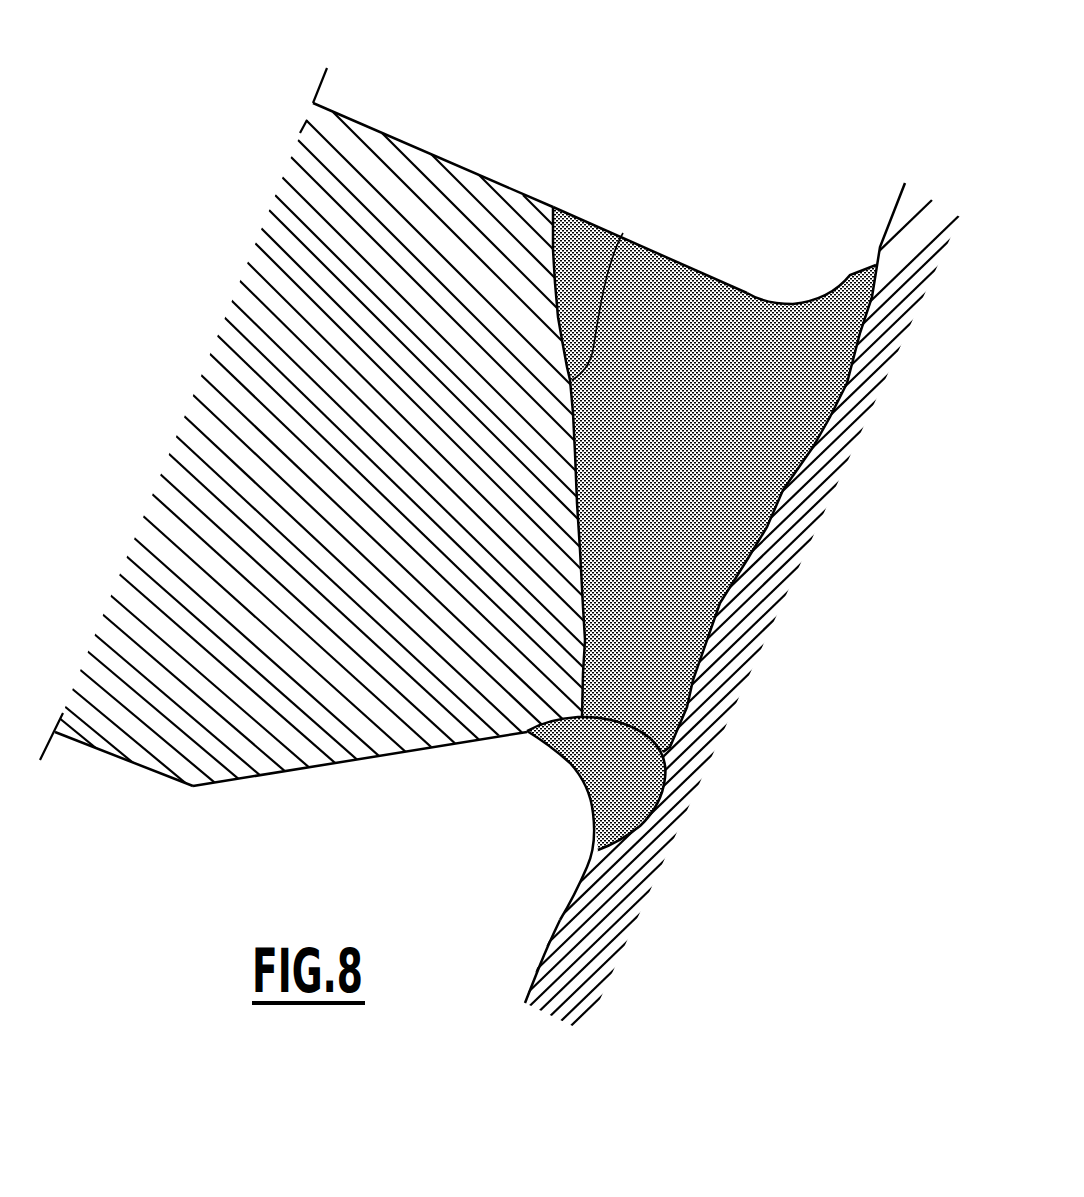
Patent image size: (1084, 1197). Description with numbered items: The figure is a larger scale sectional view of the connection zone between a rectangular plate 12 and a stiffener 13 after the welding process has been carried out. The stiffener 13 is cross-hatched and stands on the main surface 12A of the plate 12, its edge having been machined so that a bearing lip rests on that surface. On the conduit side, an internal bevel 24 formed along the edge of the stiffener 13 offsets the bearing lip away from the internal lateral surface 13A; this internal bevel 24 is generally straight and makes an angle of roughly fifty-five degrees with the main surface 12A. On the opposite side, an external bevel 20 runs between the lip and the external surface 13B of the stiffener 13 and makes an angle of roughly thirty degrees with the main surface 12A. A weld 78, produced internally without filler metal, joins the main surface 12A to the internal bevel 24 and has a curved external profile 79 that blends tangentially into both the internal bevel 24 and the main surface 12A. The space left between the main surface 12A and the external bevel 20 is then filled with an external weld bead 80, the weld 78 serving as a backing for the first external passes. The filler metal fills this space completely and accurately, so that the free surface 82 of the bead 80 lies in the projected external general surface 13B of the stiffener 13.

The plate 12 is at (757, 623).
The main surface of the plate 12A is at (556, 926).
The stiffener 13 is at (447, 247).
The internal lateral surface of the stiffener 13A is at (130, 762).
The external surface of the stiffener 13B is at (430, 153).
The external bevel 20 is at (623, 233).
The internal bevel 24 is at (397, 755).
The weld 78 is at (630, 795).
The curved external profile 79 is at (575, 774).
The external weld bead 80 is at (727, 283).
The free surface of the weld 82 is at (723, 297).